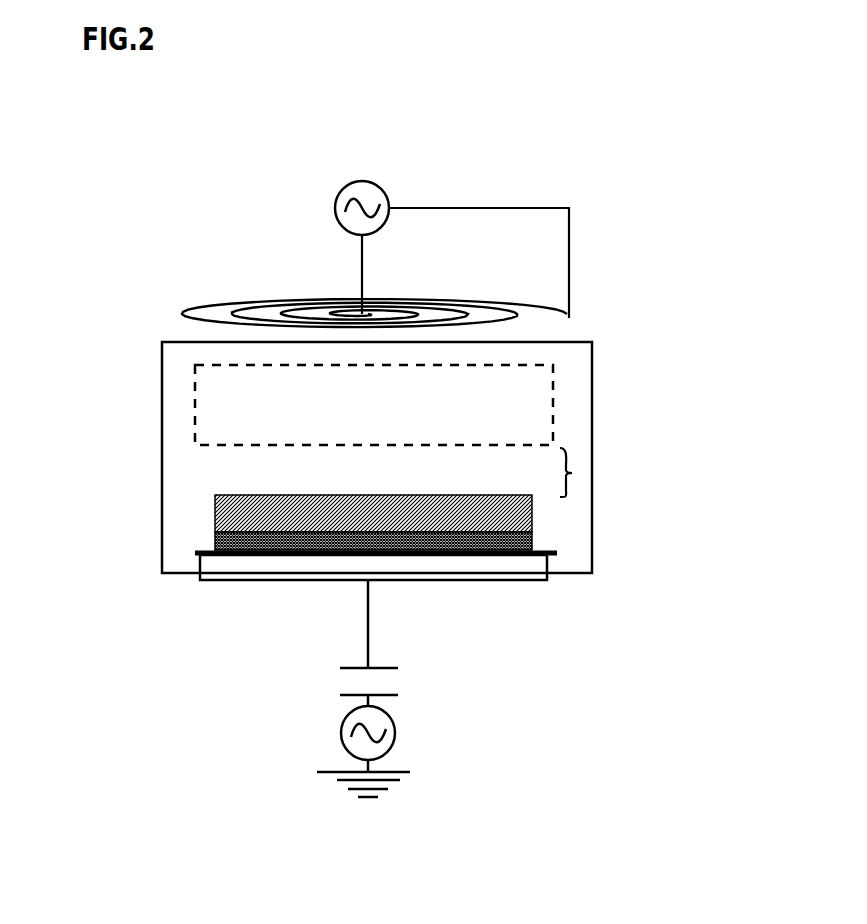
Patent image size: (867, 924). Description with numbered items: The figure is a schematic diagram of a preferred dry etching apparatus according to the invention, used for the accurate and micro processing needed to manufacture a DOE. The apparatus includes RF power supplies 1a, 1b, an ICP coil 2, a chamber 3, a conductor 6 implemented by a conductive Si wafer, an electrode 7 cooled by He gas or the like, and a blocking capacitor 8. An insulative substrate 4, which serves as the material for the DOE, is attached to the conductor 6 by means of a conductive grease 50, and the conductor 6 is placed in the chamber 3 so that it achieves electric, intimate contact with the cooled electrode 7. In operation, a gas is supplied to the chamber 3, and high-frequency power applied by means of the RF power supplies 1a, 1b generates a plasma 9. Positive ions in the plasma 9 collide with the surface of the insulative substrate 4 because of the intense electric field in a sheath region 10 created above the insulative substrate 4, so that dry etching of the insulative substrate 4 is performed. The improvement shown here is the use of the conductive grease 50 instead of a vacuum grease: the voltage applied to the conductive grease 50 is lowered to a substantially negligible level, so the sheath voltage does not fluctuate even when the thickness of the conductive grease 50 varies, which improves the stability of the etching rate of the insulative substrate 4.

The RF power supply 1a is at (362, 181).
The RF power supply 1b is at (395, 735).
The ICP coil 2 is at (160, 316).
The chamber 3 is at (162, 440).
The insulative substrate 4 is at (533, 512).
The conductor 6 is at (195, 553).
The electrode 7 is at (513, 583).
The blocking capacitor 8 is at (405, 683).
The plasma 9 is at (553, 400).
The sheath region 10 is at (572, 473).
The conductive grease 50 is at (533, 540).